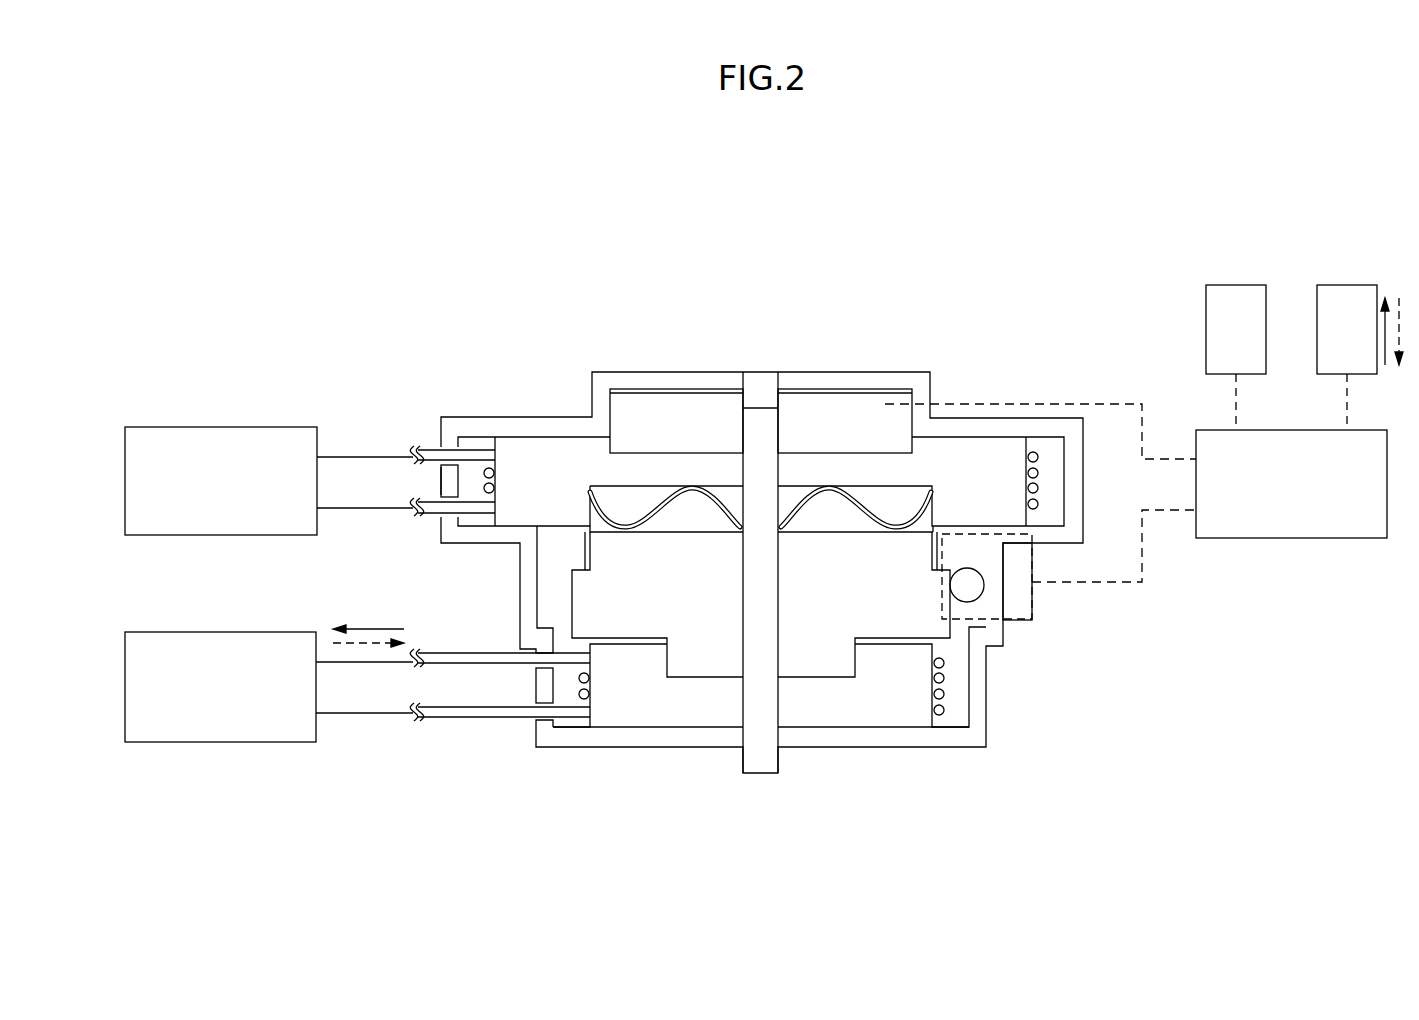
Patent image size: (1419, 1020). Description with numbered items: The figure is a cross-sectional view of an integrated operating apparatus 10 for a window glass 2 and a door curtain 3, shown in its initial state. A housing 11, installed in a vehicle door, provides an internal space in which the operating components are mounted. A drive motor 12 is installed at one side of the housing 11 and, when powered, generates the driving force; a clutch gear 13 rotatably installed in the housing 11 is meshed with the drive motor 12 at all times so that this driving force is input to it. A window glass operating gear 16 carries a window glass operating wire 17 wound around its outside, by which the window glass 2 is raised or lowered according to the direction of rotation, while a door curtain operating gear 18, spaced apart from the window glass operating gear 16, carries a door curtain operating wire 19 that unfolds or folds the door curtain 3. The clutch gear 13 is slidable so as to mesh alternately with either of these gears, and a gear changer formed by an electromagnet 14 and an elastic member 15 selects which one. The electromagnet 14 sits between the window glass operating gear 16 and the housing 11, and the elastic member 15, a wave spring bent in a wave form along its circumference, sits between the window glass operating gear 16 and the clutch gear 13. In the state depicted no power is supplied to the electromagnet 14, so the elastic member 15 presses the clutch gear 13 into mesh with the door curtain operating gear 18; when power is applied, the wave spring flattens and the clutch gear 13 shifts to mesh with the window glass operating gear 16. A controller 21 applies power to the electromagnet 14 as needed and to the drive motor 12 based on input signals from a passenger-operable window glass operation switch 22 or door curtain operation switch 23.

The window glass 2 is at (220, 427).
The door curtain 3 is at (220, 632).
The integrated operating apparatus 10 is at (1041, 202).
The housing 11 is at (622, 377).
The drive motor 12 is at (1017, 598).
The clutch gear 13 is at (589, 602).
The electromagnet 14 is at (668, 408).
The elastic member 15 is at (602, 515).
The window glass operating gear 16 is at (544, 458).
The window glass operating wire 17 is at (426, 450).
The door curtain operating gear 18 is at (643, 703).
The door curtain operating wire 19 is at (942, 693).
The controller 21 is at (1291, 539).
The window glass operation switch 22 is at (1236, 285).
The door curtain operation switch 23 is at (1342, 285).